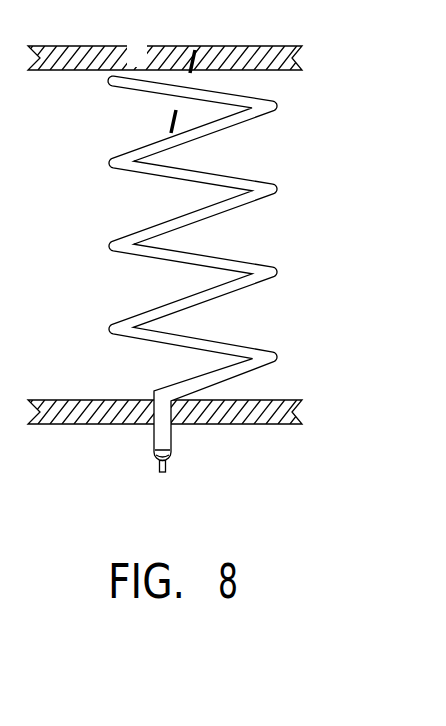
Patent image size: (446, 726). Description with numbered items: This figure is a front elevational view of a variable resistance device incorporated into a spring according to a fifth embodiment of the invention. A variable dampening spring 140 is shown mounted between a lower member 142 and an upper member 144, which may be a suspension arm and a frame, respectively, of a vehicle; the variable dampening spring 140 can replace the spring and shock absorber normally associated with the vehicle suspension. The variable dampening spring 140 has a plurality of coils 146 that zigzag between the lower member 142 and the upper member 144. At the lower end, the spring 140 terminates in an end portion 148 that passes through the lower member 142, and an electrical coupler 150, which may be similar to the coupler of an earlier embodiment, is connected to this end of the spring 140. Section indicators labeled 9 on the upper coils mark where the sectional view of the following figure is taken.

The section line 9- 9 is at (186, 63).
The variable dampening spring 140 is at (227, 274).
The lower member 142 is at (274, 404).
The upper member 144 is at (298, 62).
The coils 146 is at (138, 153).
The spring end tab 148 is at (160, 433).
The electrical coupler 150 is at (169, 457).